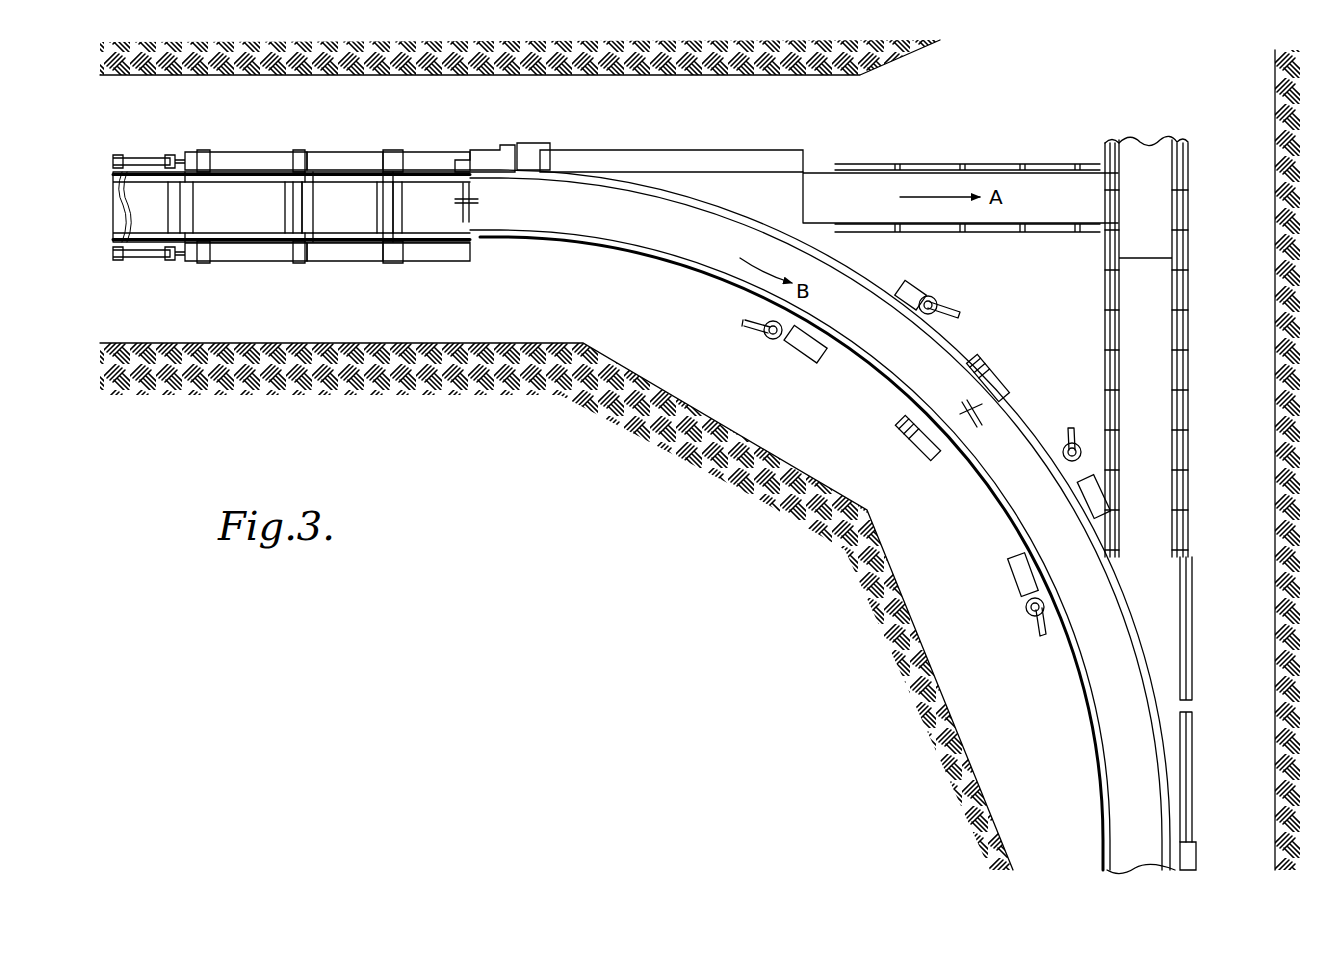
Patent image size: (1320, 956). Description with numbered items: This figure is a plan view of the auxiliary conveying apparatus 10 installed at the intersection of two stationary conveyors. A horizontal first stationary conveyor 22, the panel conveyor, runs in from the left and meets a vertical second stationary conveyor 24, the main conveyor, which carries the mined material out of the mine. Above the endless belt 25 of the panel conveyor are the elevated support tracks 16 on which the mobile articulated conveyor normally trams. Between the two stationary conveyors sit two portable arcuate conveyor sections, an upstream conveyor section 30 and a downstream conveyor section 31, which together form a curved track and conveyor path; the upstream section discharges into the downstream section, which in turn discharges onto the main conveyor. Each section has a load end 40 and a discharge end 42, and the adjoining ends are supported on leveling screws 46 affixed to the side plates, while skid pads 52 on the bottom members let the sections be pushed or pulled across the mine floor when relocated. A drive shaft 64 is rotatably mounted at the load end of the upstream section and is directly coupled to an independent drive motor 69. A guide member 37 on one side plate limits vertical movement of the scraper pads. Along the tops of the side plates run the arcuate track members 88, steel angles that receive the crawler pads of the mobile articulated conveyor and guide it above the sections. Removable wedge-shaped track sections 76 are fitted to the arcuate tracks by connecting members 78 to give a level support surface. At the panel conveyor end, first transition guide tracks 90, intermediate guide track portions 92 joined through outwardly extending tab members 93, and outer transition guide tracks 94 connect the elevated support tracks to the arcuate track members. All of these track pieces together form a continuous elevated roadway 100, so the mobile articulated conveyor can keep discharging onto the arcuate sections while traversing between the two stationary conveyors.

The auxiliary conveying apparatus 10 is at (888, 434).
The elevated support tracks 16 is at (146, 238).
The first stationary conveyor 22 is at (790, 185).
The second stationary conveyor 24 is at (1155, 570).
The endless belt 25 is at (252, 216).
The upstream conveyor section 30 is at (673, 247).
The downstream conveyor section 31 is at (1125, 757).
The guide member 37 is at (665, 200).
The load end 40 is at (482, 240).
The discharge end 42 is at (952, 396).
The leveling screws 46 is at (764, 345).
The skid pads 52 is at (805, 365).
The drive shafts 64 is at (480, 207).
The drive motors 69 is at (535, 150).
The wedge-shaped track sections 76 is at (1145, 635).
The connecting members 78 is at (1003, 398).
The arcuate track members 88 is at (670, 190).
The first transition guide tracks 90 is at (415, 165).
The intermediate guide track portions 92 is at (318, 165).
The outwardly extending tab member 93 is at (318, 232).
The transition guide tracks 94 is at (220, 165).
The continuous elevated roadway 100 is at (562, 252).